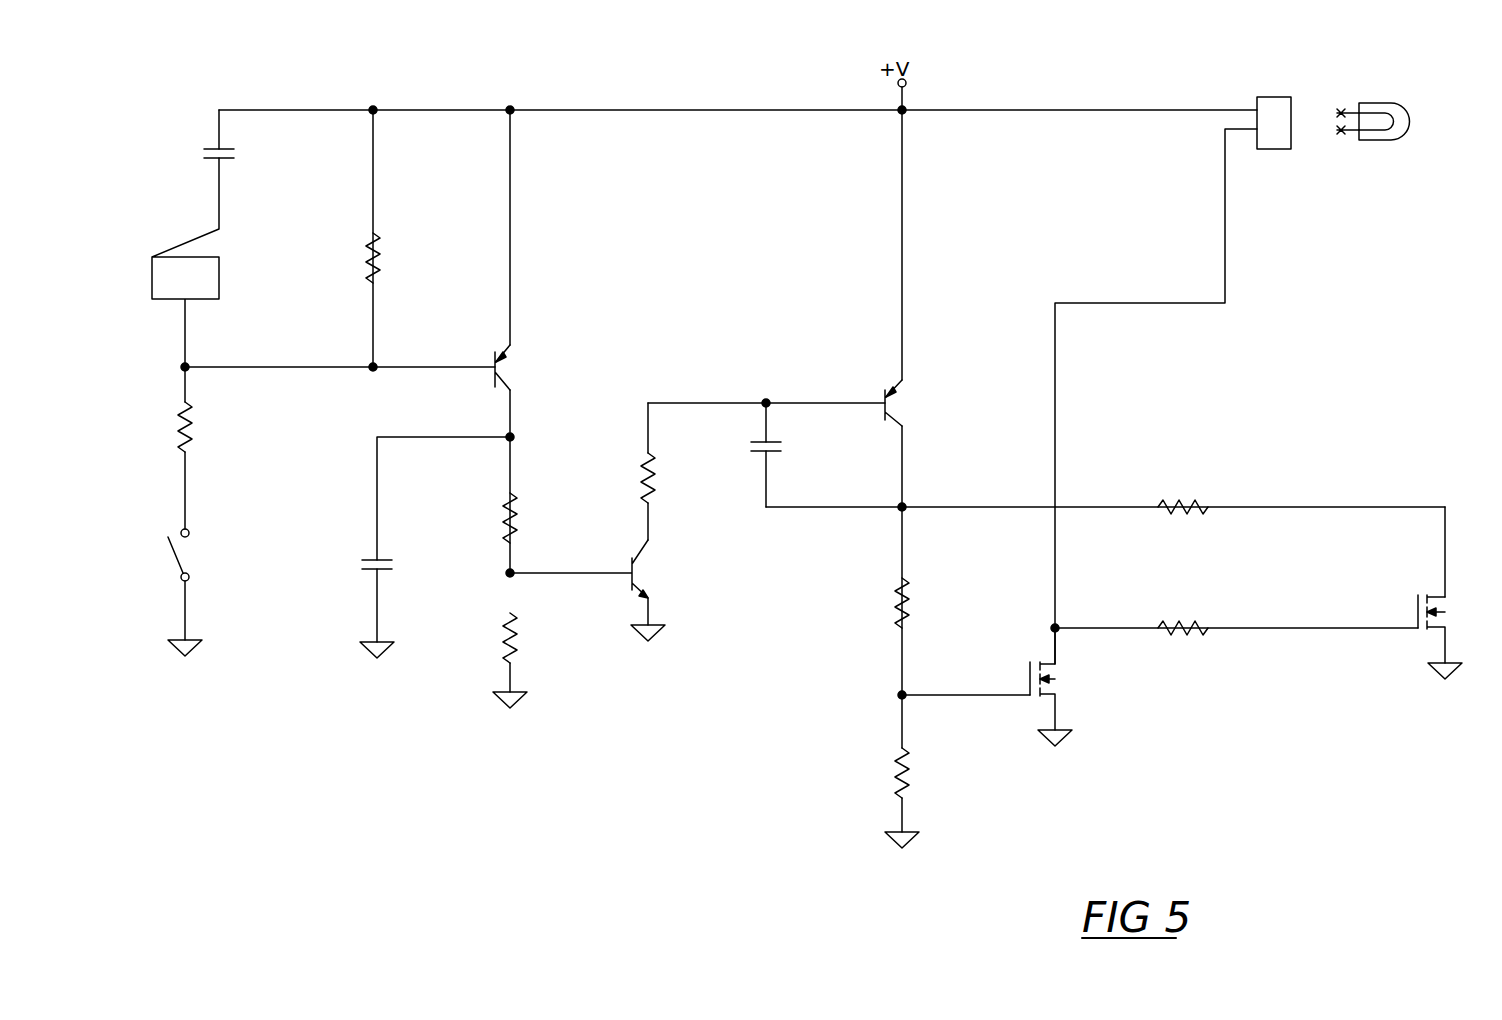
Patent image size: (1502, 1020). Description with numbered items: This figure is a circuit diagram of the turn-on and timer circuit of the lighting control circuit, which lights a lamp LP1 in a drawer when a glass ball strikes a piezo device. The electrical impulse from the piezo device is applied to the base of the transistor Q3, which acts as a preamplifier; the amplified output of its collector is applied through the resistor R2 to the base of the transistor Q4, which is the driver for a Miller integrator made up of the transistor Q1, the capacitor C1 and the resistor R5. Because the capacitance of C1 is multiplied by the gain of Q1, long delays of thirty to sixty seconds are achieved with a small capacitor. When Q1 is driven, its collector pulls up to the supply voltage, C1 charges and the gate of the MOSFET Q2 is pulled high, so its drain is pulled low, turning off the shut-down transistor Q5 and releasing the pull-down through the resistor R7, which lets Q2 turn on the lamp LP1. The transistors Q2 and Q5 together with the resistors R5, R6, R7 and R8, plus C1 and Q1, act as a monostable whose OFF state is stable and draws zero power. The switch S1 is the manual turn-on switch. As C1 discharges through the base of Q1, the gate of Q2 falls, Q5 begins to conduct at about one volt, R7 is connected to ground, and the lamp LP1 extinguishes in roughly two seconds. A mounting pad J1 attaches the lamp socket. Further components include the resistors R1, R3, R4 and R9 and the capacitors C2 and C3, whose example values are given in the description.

The capacitor C1 is at (215, 238).
The resistor R3 is at (396, 258).
The shut-down transistor Q5 is at (522, 367).
The resistor R9 is at (207, 448).
The manual turn-on switch S1 is at (206, 590).
The capacitor C3 is at (435, 547).
The resistor R1 is at (529, 518).
The resistor R2 is at (528, 660).
The resistor R7 is at (669, 471).
The MOSFET Q2 is at (601, 590).
The capacitor C2 is at (787, 455).
The transistor Q1 is at (917, 403).
The resistor R6 is at (924, 603).
The resistor R4 is at (917, 771).
The resistor R8 is at (1183, 492).
The resistor R5 is at (1236, 614).
The transistor Q3 is at (1067, 687).
The transistor Q4 is at (1455, 637).
The mounting pad J1 is at (1274, 111).
The lamp LP1 is at (1373, 106).